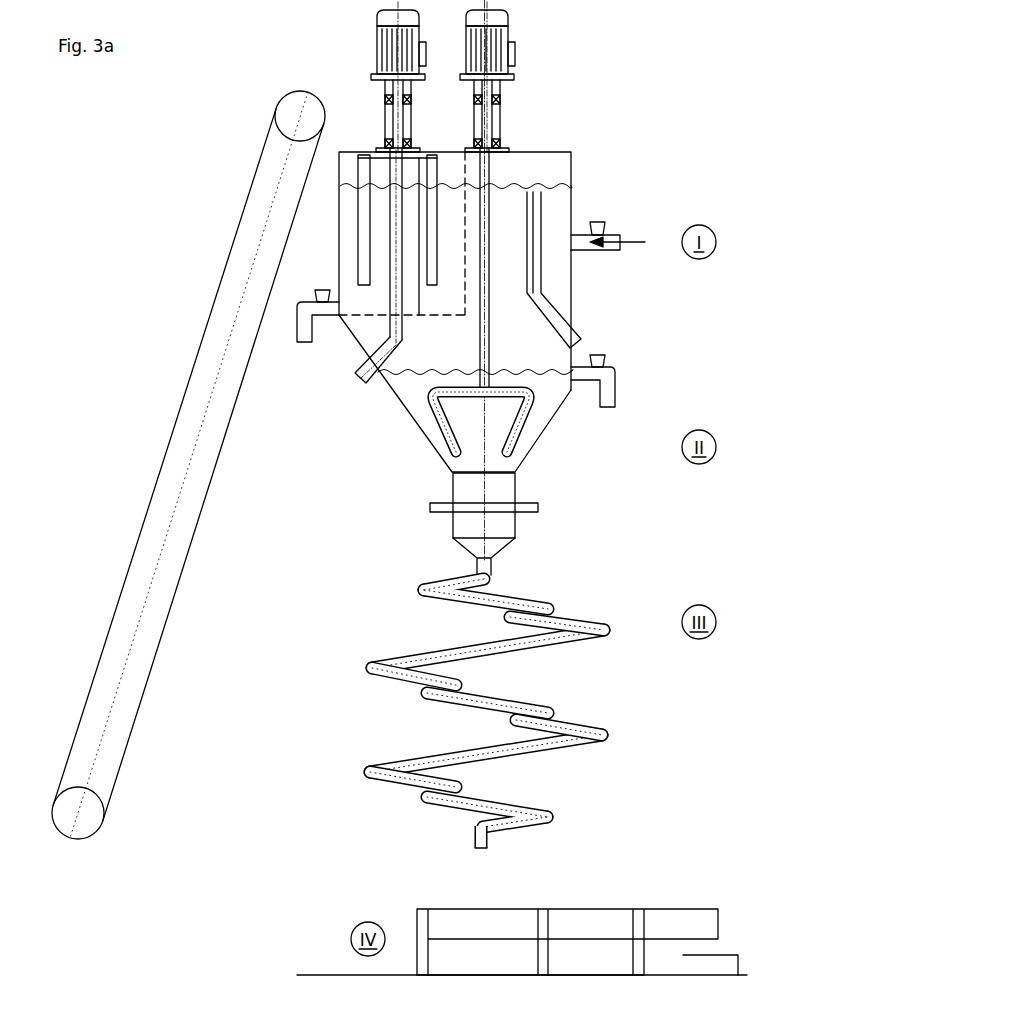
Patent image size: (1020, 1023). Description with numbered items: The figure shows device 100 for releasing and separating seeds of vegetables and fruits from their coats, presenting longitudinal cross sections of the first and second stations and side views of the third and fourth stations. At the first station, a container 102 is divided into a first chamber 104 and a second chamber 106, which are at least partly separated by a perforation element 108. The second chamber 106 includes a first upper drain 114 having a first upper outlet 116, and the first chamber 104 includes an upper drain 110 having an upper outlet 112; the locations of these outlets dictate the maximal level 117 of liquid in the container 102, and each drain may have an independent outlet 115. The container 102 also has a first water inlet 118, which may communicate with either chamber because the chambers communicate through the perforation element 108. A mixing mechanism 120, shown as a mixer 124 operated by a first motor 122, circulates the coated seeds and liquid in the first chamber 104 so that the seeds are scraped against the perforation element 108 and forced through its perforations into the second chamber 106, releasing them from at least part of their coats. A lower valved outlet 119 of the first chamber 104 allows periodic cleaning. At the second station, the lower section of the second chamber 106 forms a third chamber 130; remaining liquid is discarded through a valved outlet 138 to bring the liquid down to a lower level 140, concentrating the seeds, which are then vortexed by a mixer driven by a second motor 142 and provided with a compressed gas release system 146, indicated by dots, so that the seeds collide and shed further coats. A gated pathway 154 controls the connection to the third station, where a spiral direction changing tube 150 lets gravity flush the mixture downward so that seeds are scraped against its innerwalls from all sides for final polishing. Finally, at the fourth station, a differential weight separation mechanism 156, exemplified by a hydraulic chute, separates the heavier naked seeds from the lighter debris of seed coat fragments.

The device 100 is at (714, 143).
The container 102 is at (488, 203).
The first chamber 104 is at (380, 235).
The second chamber 106 is at (565, 214).
The perforation element 108 is at (373, 317).
The upper drain 110 is at (392, 207).
The upper outlet 112 is at (390, 185).
The first upper drain 114 is at (540, 268).
The independent outlet 115 is at (360, 370).
The first upper outlet 116 is at (571, 183).
The maximal level 117 is at (571, 202).
The first water inlet 118 is at (612, 250).
The lower valved outlet 119 is at (298, 330).
The mixing mechanism 120 is at (366, 260).
The first motor 122 is at (375, 16).
The mixer 124 is at (375, 330).
The third chamber 130 is at (545, 437).
The valved outlet 138 is at (607, 393).
The lower level 140 is at (571, 325).
The second motor 142 is at (506, 18).
The compressed gas release system 146 is at (440, 433).
The direction changing tube 150 is at (360, 675).
The gated pathway 154 is at (433, 493).
The differential weight separation mechanism 156 is at (638, 908).